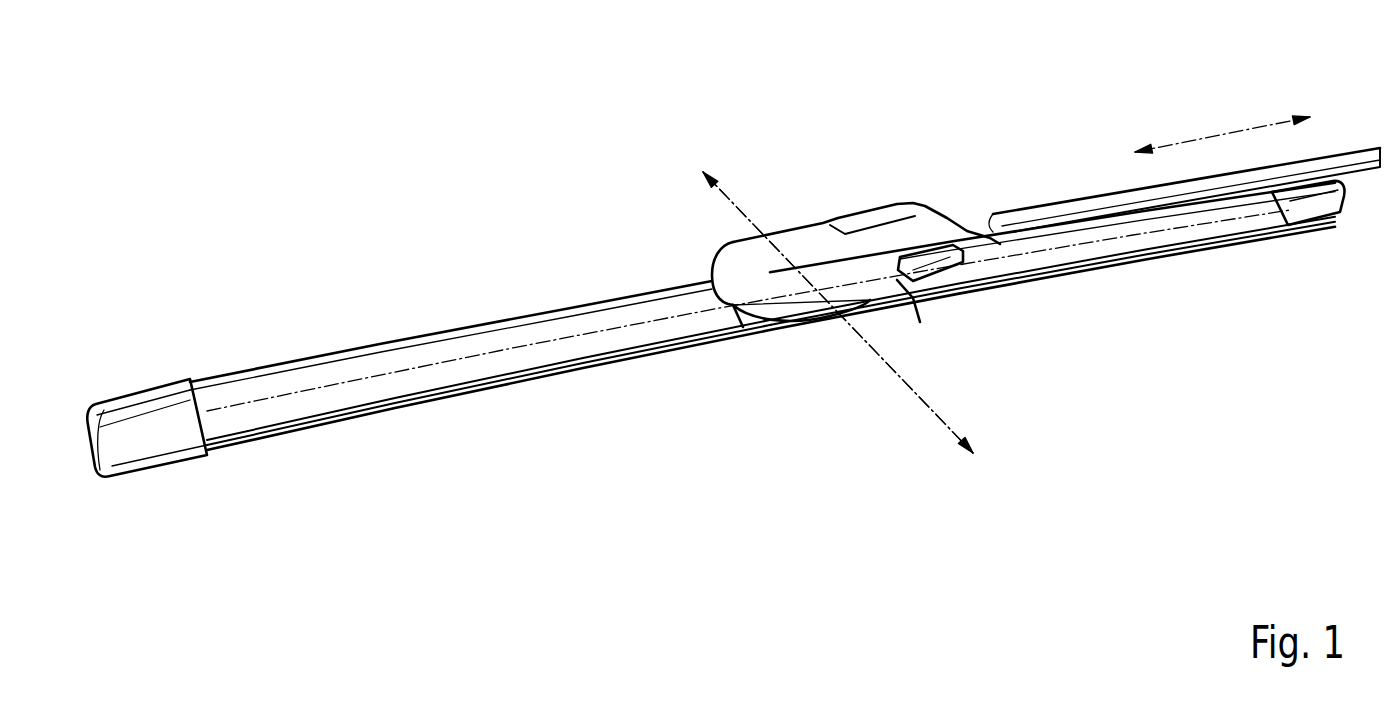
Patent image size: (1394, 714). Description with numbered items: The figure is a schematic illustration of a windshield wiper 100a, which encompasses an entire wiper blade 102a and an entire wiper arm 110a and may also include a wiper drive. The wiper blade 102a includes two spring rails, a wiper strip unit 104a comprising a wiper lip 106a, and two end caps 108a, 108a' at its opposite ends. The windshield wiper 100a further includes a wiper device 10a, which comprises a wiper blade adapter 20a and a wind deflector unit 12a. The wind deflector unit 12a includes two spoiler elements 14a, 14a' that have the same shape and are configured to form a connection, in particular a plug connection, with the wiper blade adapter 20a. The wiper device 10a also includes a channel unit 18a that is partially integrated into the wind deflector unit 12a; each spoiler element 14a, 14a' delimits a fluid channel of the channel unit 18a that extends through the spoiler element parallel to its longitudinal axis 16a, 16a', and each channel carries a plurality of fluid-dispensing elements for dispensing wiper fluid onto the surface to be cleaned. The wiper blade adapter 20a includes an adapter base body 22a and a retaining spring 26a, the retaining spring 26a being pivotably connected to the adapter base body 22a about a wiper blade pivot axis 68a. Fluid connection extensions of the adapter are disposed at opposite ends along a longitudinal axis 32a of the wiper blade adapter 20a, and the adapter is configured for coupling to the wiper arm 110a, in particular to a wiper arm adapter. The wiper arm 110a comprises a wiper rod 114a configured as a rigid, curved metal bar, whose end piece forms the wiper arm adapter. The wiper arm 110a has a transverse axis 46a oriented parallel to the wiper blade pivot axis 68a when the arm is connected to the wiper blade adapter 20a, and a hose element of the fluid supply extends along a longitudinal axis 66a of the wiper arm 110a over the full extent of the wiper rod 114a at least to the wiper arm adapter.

The wiper device 10a is at (828, 128).
The windshield wiper 100a is at (330, 146).
The wiper blade 102a is at (608, 281).
The wind deflector unit 12a is at (307, 331).
The spoiler element 14a is at (489, 377).
The spoiler element 14a' is at (1053, 268).
The longitudinal axis 16a is at (489, 368).
The longitudinal axis 16a' is at (1053, 273).
The wiper lip 106a is at (579, 382).
The end cap 108a is at (147, 403).
The end cap 108a' is at (1311, 235).
The wiper arm 110a is at (1042, 216).
The wiper rod 114a is at (1042, 216).
The channel unit 18a is at (668, 241).
The wiper blade adapter 20a is at (785, 346).
The adapter base body 22a is at (800, 322).
The retaining spring 26a is at (803, 248).
The longitudinal axis 32a is at (912, 300).
The transverse axis 46a is at (948, 413).
The wiper blade pivot axis 68a is at (948, 413).
The longitudinal axis 66a is at (1265, 122).
The wiper strip unit 104a is at (1197, 122).